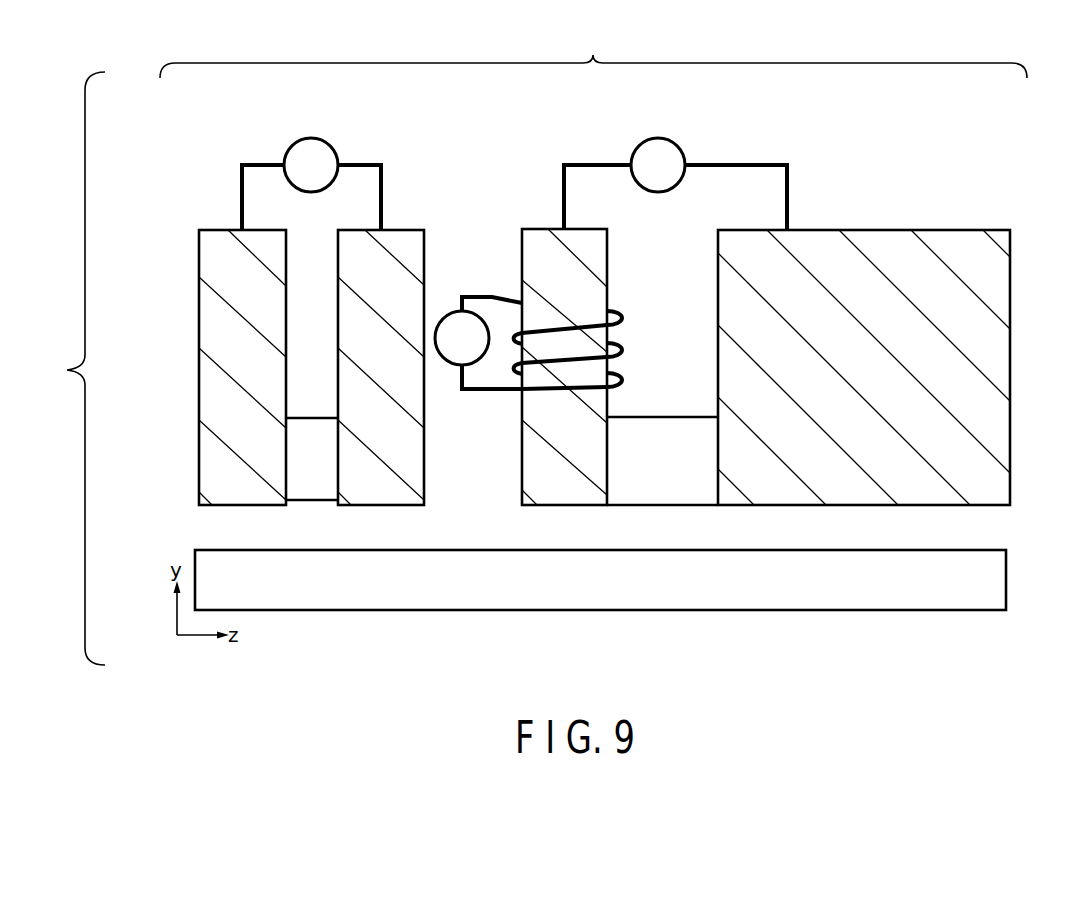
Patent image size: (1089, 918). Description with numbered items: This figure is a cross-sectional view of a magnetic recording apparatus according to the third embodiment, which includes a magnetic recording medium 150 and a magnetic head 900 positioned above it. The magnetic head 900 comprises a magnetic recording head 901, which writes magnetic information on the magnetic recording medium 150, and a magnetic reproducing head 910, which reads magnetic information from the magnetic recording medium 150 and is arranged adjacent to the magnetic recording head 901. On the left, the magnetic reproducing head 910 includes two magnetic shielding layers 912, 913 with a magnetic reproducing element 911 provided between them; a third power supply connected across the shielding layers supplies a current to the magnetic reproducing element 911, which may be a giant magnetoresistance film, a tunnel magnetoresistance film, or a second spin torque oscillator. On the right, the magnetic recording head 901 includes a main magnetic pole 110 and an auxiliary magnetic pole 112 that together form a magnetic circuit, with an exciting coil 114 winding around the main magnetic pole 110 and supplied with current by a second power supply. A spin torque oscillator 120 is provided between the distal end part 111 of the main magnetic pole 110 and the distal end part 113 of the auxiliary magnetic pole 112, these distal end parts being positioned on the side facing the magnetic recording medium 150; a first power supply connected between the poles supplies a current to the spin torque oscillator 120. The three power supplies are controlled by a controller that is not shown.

The magnetic head 900 is at (593, 50).
The magnetic recording head 901 is at (892, 144).
The magnetic reproducing head 910 is at (230, 145).
The magnetic reproducing element 911 is at (310, 503).
The magnetic shielding layer 912 is at (199, 327).
The magnetic shielding layer 913 is at (417, 478).
The main magnetic pole 110 is at (521, 245).
The distal end part 111 is at (522, 411).
The auxiliary magnetic pole 112 is at (1011, 241).
The distal end part 113 is at (993, 487).
The exciting coil 114 is at (553, 326).
The spin torque oscillator 120 is at (665, 417).
The magnetic recording medium 150 is at (934, 600).